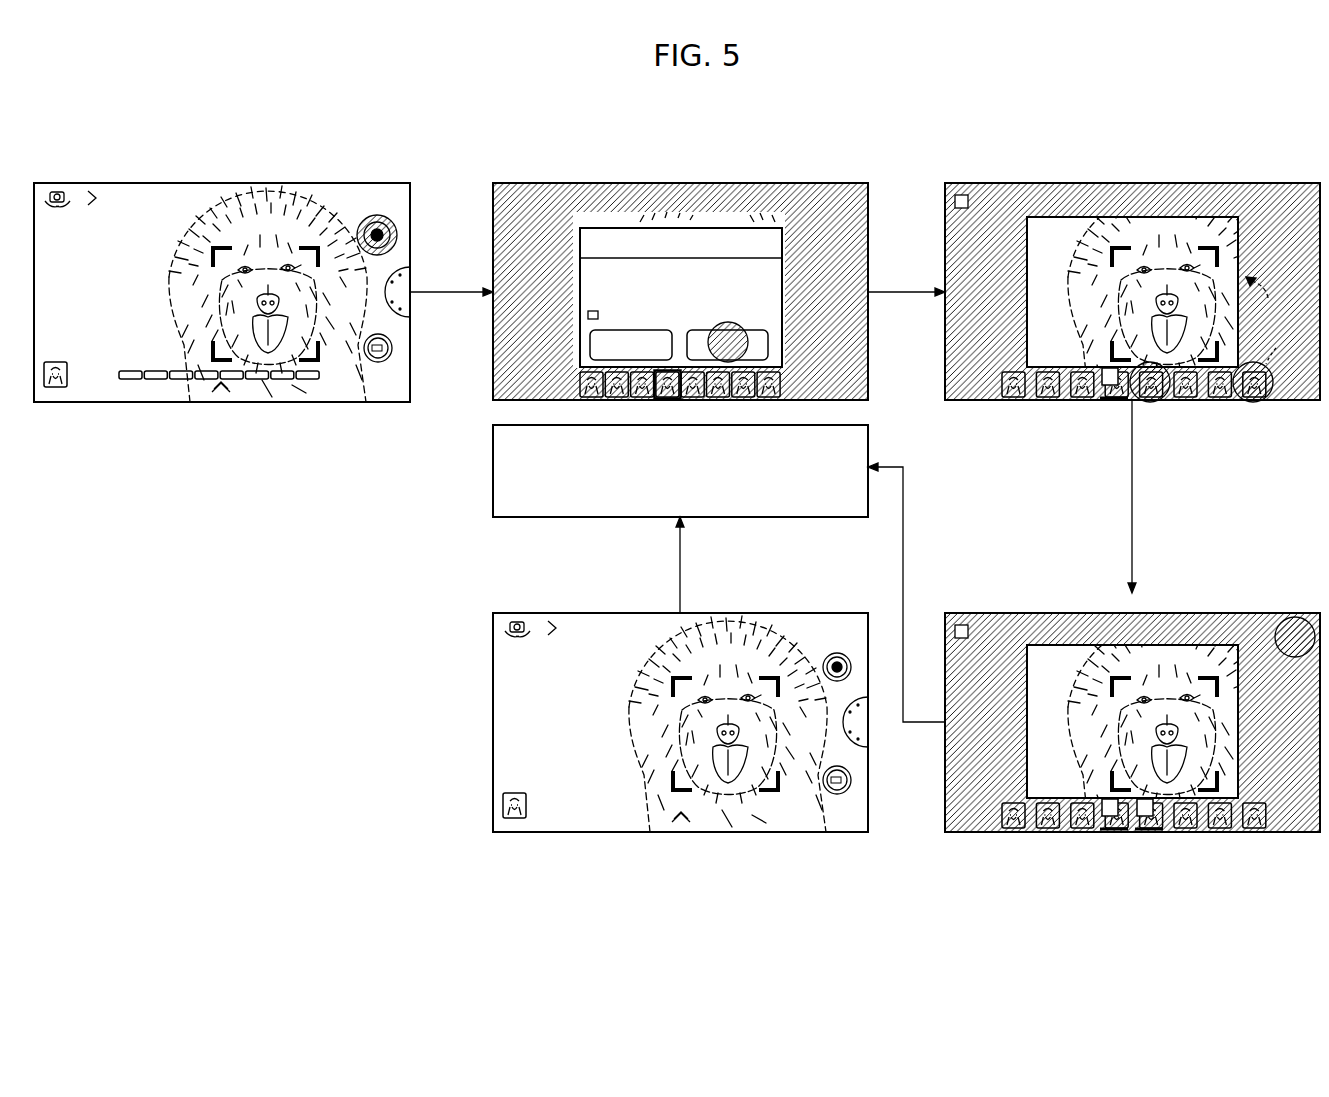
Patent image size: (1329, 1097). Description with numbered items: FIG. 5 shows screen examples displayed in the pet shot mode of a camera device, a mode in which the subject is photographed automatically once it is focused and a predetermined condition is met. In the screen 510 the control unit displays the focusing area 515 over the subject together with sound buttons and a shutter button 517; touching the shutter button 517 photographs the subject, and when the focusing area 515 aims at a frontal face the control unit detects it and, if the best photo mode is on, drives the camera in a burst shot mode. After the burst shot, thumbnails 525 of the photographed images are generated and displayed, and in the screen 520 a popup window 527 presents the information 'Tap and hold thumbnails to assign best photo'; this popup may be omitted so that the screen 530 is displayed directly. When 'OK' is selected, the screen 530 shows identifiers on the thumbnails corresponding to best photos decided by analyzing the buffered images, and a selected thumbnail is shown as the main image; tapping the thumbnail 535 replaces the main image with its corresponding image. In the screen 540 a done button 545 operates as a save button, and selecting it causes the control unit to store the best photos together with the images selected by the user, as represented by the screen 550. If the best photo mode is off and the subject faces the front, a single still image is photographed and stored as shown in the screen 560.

The screen 510 is at (362, 178).
The focusing area 515 is at (212, 247).
The shutter button 517 is at (394, 225).
The screen 520 is at (822, 178).
The thumbnails 525 is at (782, 388).
The popup window 527 is at (661, 217).
The screen 530 is at (1278, 178).
The thumbnail 535 is at (1263, 402).
The screen 540 is at (1208, 606).
The done button 545 is at (1305, 616).
The screen 550 is at (877, 420).
The screen 560 is at (822, 608).